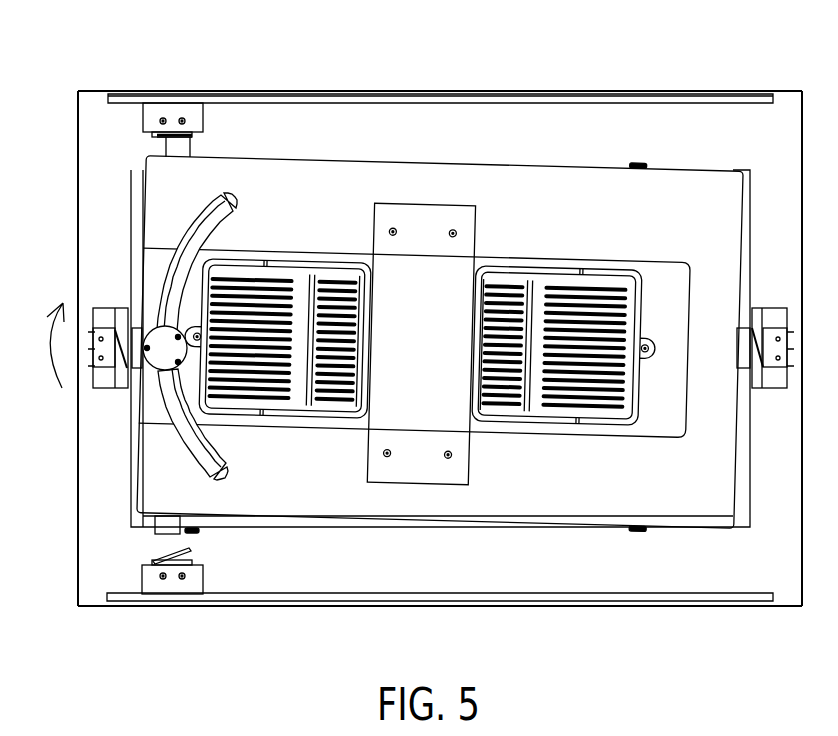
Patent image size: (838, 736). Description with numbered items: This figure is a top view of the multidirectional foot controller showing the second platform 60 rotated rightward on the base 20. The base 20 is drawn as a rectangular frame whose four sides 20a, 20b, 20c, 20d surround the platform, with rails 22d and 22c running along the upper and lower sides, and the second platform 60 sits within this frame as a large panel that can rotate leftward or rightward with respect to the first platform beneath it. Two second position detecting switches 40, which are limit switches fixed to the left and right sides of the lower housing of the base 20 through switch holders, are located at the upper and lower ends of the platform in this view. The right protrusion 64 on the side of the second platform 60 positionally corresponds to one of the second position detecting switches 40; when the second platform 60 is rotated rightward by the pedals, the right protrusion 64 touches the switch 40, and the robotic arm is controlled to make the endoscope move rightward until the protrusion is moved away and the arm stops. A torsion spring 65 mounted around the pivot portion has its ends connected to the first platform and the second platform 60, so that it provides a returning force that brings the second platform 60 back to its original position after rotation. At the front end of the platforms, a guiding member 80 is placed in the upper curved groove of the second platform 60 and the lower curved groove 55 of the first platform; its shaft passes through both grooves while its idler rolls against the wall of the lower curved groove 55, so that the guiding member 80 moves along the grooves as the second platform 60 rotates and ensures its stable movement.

The base 20 is at (409, 345).
The first frame side 20a is at (103, 420).
The second frame side 20b is at (778, 278).
The third frame side 20c is at (440, 621).
The fourth frame side 20d is at (440, 69).
The guide rail 22c is at (293, 575).
The guide rail 22d is at (251, 120).
The second position detecting switch 40 is at (133, 137).
The lower curved groove 55 is at (210, 465).
The second platform 60 is at (357, 153).
The right protrusion 64 is at (167, 149).
The torsion spring 65 is at (177, 430).
The guiding member 80 is at (148, 325).